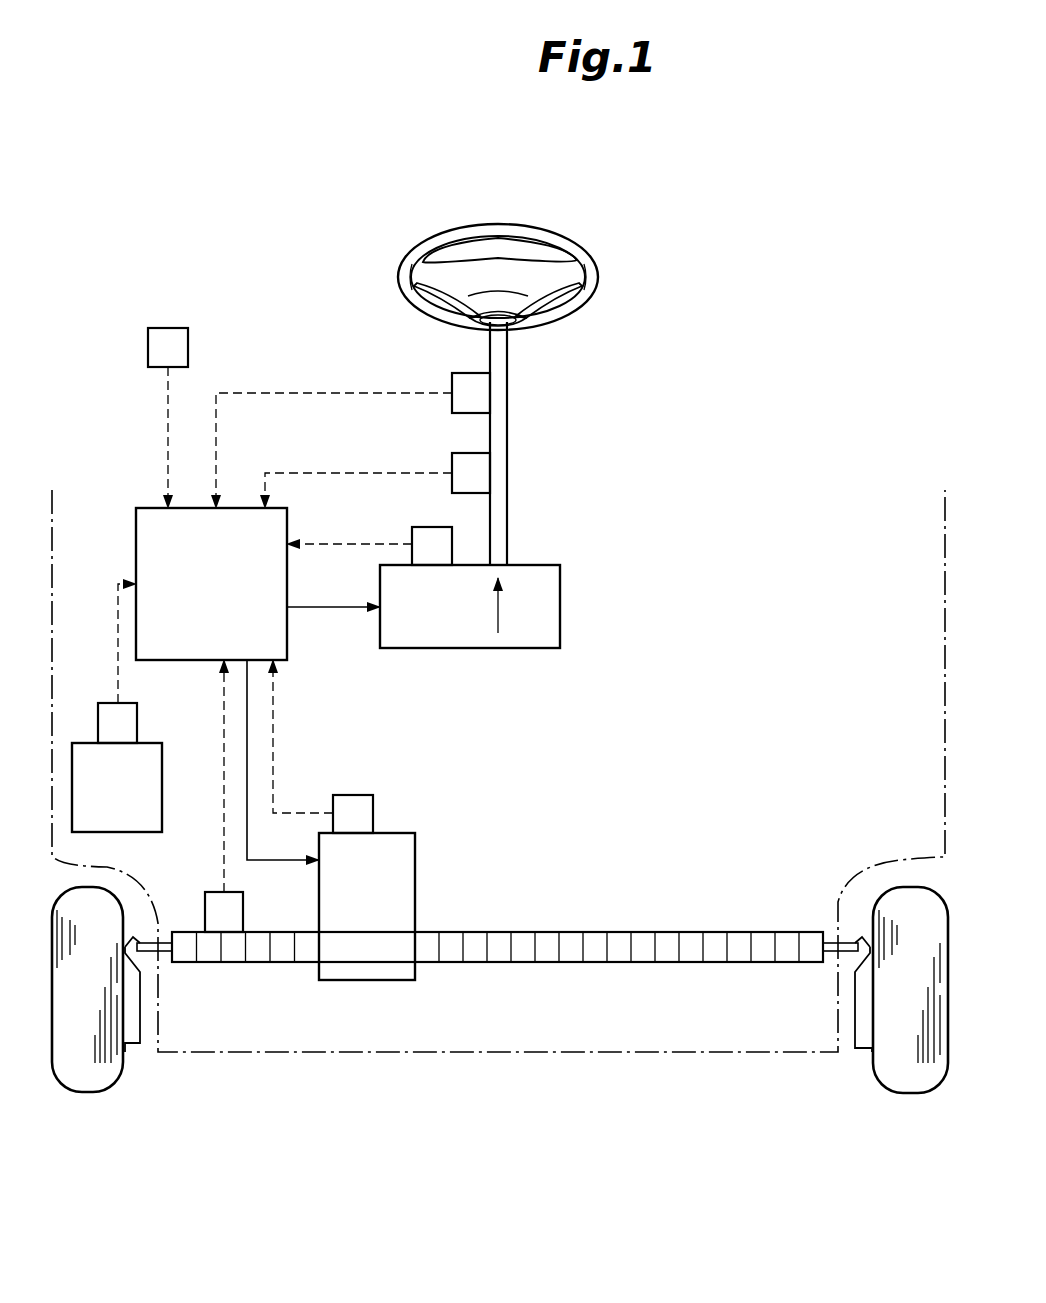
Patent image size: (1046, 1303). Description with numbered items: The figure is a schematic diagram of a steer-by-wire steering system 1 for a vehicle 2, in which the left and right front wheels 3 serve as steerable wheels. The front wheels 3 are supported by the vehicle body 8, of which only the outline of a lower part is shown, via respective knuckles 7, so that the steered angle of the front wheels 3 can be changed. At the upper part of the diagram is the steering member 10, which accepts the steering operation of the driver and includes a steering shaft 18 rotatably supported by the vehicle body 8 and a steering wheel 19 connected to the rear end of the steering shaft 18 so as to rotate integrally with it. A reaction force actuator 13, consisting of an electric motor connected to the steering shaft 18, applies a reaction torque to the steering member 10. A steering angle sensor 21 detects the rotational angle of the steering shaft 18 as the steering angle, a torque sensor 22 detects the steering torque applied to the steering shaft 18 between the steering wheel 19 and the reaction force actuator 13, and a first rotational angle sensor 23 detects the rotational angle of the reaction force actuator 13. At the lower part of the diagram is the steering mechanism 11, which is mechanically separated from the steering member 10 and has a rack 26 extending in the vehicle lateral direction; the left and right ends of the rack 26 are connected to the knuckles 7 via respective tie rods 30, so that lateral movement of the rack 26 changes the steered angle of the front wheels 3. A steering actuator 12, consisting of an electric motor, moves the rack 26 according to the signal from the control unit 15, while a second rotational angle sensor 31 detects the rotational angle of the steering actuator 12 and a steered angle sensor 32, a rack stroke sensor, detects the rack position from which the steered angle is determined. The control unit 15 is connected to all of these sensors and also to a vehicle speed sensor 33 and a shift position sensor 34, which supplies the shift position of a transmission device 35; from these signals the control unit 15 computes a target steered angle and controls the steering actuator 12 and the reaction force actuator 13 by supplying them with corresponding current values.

The steering system 1 is at (380, 233).
The vehicle 2 is at (193, 148).
The front wheels 3 is at (82, 1092).
The knuckles 7 is at (125, 1052).
The vehicle body 8 is at (722, 1052).
The steering member 10 is at (598, 215).
The steering mechanism 11 is at (497, 882).
The steering actuator 12 is at (347, 980).
The reaction force actuator 13 is at (560, 592).
The control unit 15 is at (172, 660).
The steering shaft 18 is at (507, 418).
The steering wheel 19 is at (577, 315).
The steering angle sensor 21 is at (458, 373).
The torque sensor 22 is at (472, 453).
The first rotational angle sensor 23 is at (430, 527).
The rack 26 is at (641, 962).
The tie rods 30 is at (167, 960).
The second rotational angle sensor 31 is at (373, 813).
The steered angle sensor 32 is at (205, 910).
The vehicle speed sensor 33 is at (172, 326).
The shift position sensor 34 is at (98, 722).
The transmission device 35 is at (162, 808).